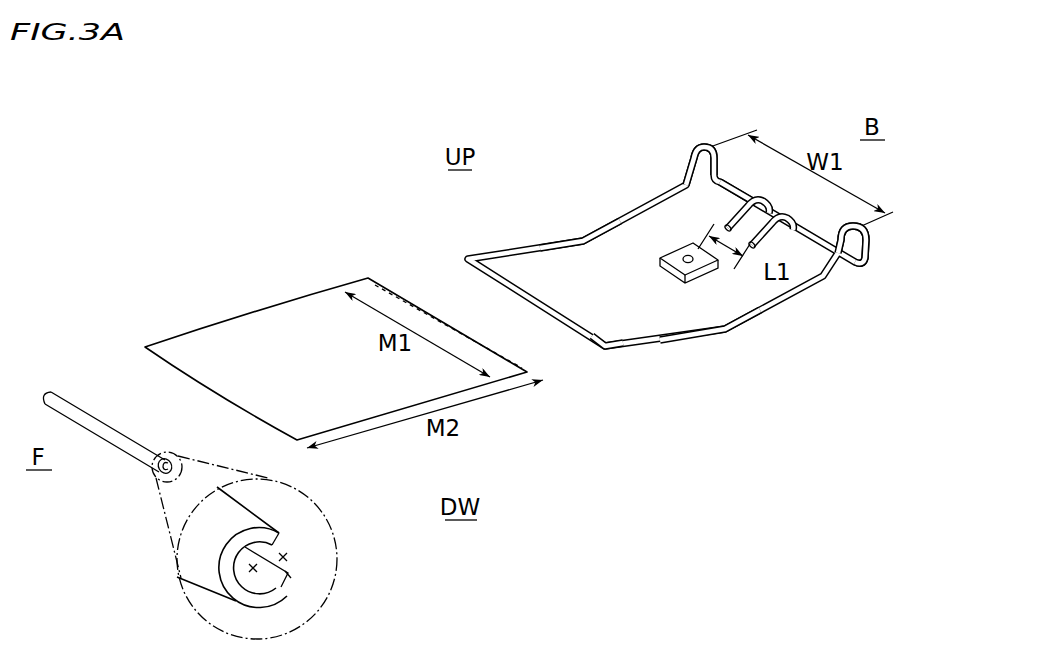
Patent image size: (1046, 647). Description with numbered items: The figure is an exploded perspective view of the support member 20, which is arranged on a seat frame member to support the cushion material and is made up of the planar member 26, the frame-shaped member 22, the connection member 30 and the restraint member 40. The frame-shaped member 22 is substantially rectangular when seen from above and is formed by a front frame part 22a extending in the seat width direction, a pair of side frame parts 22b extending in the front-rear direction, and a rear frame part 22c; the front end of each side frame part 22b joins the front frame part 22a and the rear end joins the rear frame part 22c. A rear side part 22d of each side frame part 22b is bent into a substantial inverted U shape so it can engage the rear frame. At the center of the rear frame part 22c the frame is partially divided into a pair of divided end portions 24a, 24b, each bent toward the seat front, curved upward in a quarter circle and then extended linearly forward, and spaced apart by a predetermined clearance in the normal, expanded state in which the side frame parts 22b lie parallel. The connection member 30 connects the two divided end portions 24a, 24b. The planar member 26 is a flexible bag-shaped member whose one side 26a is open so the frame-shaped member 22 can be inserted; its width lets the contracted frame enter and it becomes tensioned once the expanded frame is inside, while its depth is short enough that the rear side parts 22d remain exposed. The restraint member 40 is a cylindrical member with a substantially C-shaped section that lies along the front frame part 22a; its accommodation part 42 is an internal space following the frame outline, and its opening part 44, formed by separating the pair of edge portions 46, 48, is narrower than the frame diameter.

The support member 20 is at (193, 243).
The frame-shaped member 22 is at (522, 250).
The front frame part 22a is at (592, 348).
The side frame parts 22b is at (587, 248).
The rear frame part 22c is at (735, 182).
The rear side part 22d is at (694, 156).
The divided end portion 24a is at (754, 207).
The divided end portion 24b is at (798, 236).
The planar member 26 is at (273, 307).
The one side 26a is at (430, 312).
The connection member 30 is at (677, 247).
The restraint member 40 is at (57, 380).
The accommodation part 42 is at (258, 572).
The opening part 44 is at (285, 557).
The edge portion 46 is at (284, 538).
The edge portion 48 is at (290, 575).